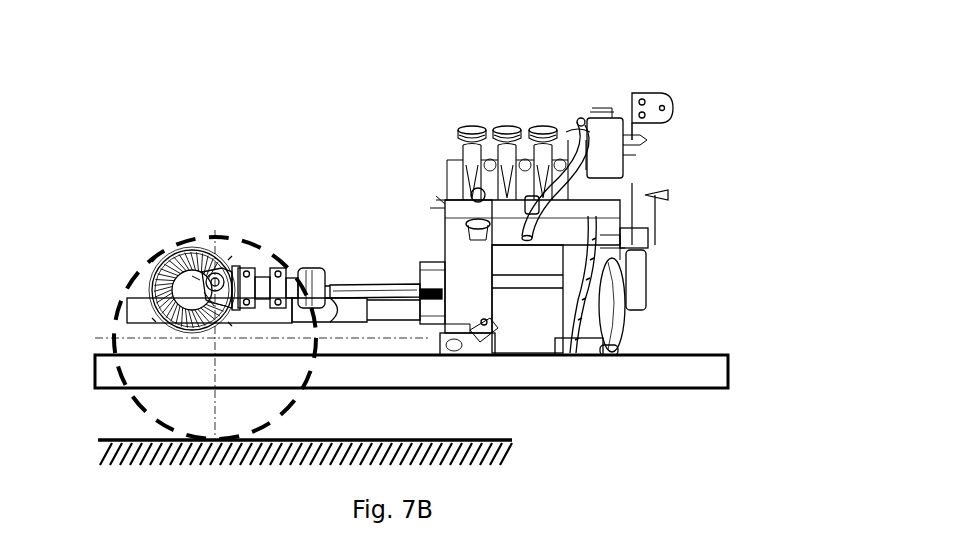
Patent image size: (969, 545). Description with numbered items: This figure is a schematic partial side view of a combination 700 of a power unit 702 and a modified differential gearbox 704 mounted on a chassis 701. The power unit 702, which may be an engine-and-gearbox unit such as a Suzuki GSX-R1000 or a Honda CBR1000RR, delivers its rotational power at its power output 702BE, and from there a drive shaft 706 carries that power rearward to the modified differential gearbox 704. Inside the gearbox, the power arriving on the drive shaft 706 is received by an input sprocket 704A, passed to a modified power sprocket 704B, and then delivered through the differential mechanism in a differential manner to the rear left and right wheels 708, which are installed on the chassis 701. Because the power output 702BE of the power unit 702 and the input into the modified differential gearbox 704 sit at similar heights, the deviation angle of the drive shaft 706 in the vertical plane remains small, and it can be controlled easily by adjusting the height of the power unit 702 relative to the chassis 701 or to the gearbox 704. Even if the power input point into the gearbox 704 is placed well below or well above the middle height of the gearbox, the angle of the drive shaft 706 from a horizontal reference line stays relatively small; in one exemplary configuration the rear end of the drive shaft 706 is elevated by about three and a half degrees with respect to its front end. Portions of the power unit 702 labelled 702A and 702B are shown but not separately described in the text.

The combination of power unit and modified differential gearbox 700 is at (320, 83).
The chassis 701 is at (665, 378).
The power unit 702 is at (690, 150).
The exhaust pipe 702A is at (528, 133).
The engine mount 702B is at (482, 323).
The power output of power unit 702BE is at (442, 298).
The modified differential gearbox 704 is at (147, 208).
The input sprocket 704A is at (228, 272).
The modified power sprocket 704B is at (158, 273).
The drive shaft 706 is at (367, 280).
The rear wheels 708 is at (135, 403).